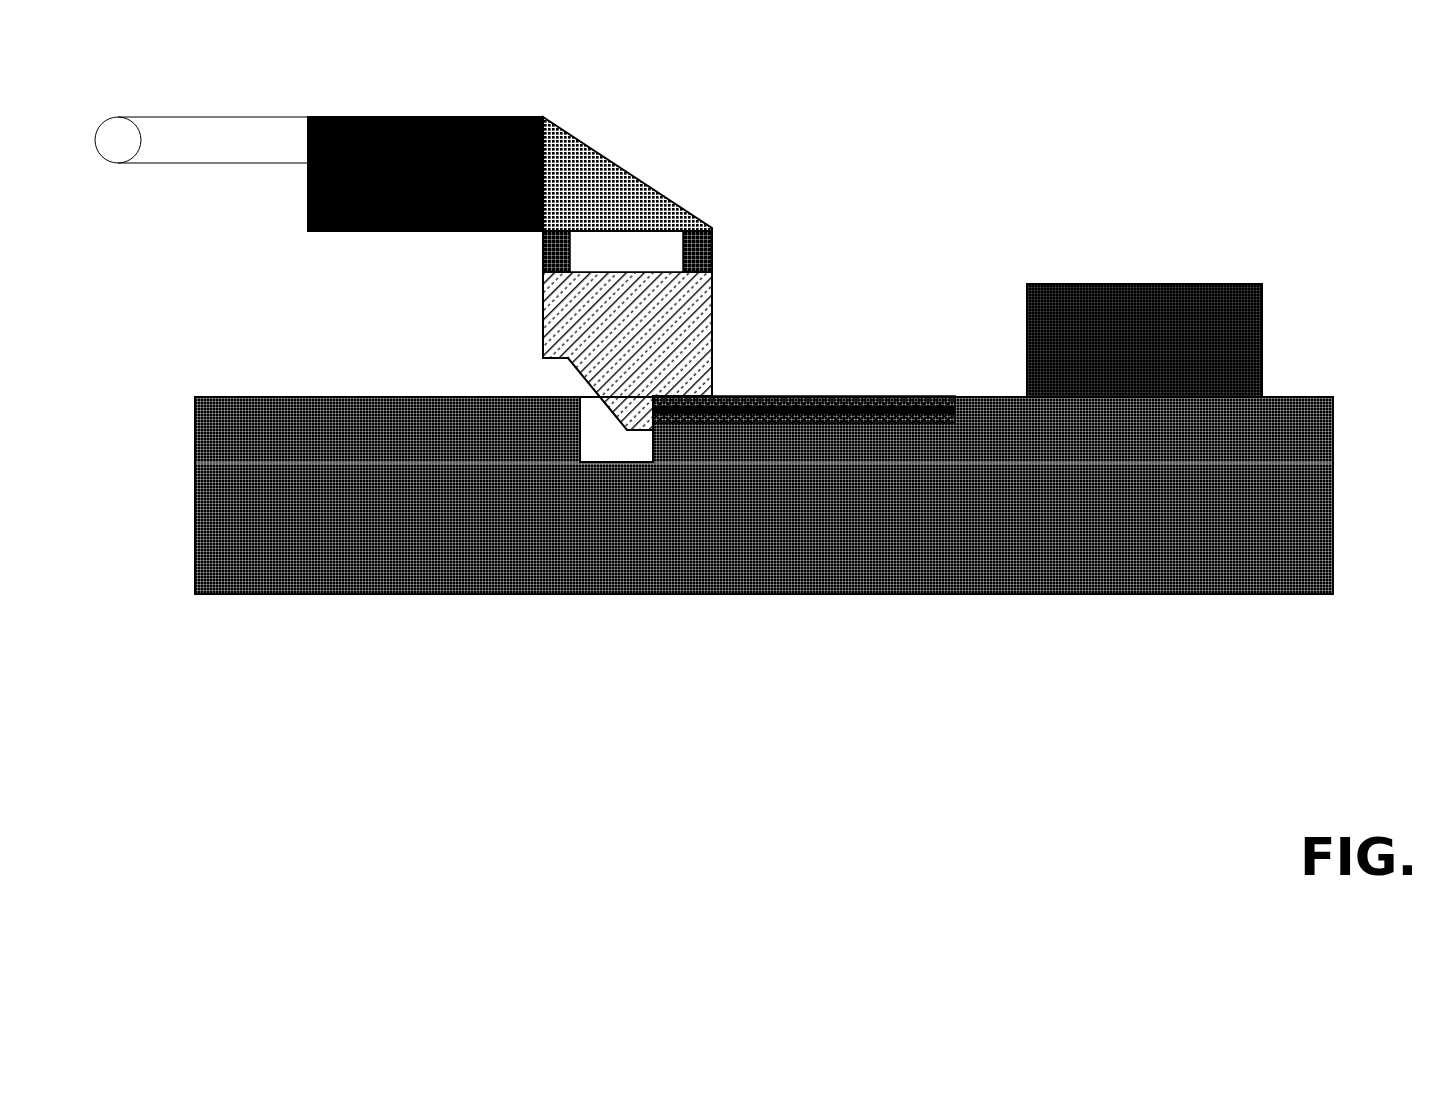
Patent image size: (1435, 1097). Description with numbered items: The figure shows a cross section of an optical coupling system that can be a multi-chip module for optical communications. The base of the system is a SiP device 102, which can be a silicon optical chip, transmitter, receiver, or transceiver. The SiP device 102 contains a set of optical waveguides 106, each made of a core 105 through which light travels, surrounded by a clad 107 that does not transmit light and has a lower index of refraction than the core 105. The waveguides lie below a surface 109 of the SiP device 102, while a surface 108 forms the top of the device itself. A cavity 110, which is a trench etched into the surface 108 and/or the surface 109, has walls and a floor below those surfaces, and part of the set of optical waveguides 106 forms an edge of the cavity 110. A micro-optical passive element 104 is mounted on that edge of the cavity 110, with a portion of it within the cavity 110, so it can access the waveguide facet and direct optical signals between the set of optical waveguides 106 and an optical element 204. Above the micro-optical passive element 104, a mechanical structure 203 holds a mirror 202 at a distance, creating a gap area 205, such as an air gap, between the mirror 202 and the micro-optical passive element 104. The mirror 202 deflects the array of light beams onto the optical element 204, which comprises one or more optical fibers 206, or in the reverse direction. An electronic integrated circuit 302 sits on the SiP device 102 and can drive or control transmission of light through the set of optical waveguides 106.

The SiP device 102 is at (1292, 537).
The micro-optical passive element 104 is at (712, 345).
The core 105 is at (920, 410).
The set of optical waveguides 106 is at (850, 384).
The clad 107 is at (900, 400).
The surface 108 is at (466, 390).
The surface 109 is at (840, 385).
The cavity 110 is at (625, 458).
The mirror 202 is at (620, 192).
The mechanical structure 203 is at (543, 252).
The optical element 204 is at (433, 143).
The gap area 205 is at (655, 248).
The optical fibers 206 is at (223, 128).
The electronic integrated circuit 302 is at (1218, 295).